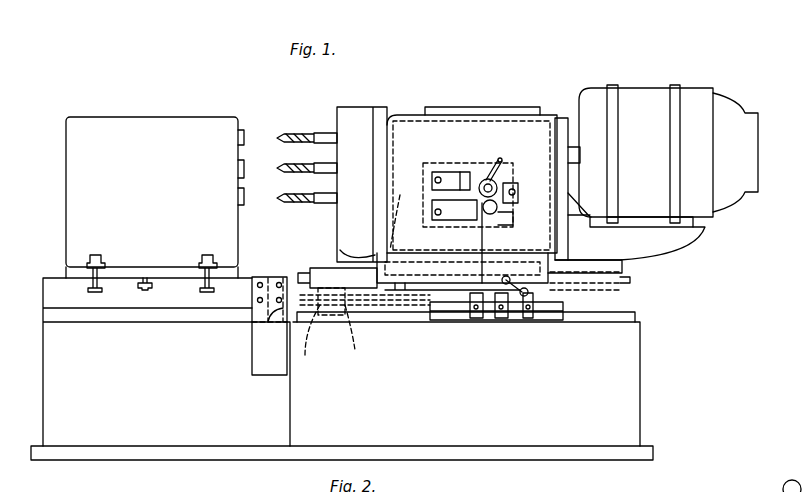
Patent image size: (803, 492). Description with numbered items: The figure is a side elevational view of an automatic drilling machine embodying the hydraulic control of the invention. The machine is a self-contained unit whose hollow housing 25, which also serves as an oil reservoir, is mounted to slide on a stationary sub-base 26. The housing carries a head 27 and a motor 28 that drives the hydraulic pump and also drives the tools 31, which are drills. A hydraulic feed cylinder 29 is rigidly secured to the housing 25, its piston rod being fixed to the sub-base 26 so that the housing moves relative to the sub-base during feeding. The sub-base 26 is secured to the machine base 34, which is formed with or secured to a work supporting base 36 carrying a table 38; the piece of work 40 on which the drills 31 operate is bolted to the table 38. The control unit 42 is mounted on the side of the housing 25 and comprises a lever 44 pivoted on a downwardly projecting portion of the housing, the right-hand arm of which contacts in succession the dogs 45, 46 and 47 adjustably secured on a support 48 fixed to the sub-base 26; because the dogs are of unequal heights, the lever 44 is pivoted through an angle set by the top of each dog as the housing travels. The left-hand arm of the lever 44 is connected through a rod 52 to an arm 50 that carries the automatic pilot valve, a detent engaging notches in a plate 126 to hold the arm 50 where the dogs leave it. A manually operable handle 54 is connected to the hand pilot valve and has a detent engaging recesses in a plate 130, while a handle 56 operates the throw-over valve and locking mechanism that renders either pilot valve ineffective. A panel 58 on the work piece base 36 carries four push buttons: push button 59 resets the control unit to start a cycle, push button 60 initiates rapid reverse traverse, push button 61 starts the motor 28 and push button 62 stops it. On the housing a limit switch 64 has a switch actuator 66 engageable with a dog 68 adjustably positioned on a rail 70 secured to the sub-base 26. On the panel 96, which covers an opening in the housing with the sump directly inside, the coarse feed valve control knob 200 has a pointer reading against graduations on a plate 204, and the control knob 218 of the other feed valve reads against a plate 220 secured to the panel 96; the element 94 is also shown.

The housing 25 is at (550, 120).
The sub-base 26 is at (620, 305).
The head 27 is at (355, 125).
The motor 28 is at (647, 100).
The hydraulic feed cylinder 29 is at (645, 285).
The tools 31 is at (300, 130).
The machine base 34 is at (628, 356).
The work supporting base 36 is at (165, 437).
The table 38 is at (50, 272).
The work 40 is at (143, 128).
The control unit 42 is at (482, 160).
The lever 44 is at (526, 288).
The dog 45 is at (528, 318).
The dog 46 is at (503, 318).
The dog 47 is at (480, 318).
The support 48 is at (448, 312).
The arm 50 is at (513, 218).
The rod 52 is at (509, 260).
The handle 54 is at (505, 166).
The handle 56 is at (518, 190).
The panel 58 is at (258, 353).
The push button 59 is at (284, 276).
The push button 60 is at (270, 322).
The push button 61 is at (257, 286).
The push button 62 is at (257, 300).
The limit switch 64 is at (403, 216).
The switch actuator 66 is at (425, 270).
The dog 68 is at (365, 327).
The rail 70 is at (354, 335).
The belt 94 is at (540, 188).
The panel 96 is at (468, 178).
The plate 126 is at (560, 205).
The plate 130 is at (505, 178).
The control knob 200 is at (440, 176).
The plate 204 is at (448, 181).
The control knob 218 is at (420, 238).
The plate 220 is at (455, 200).